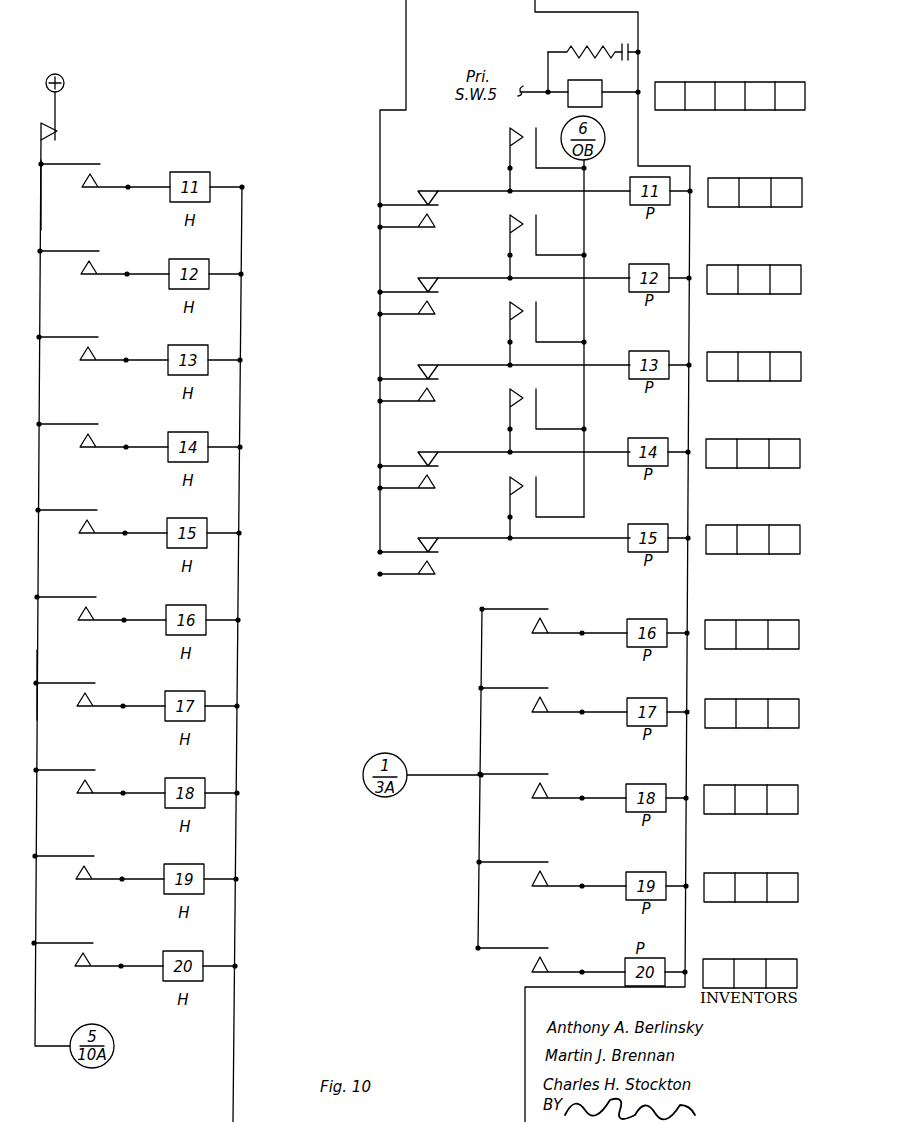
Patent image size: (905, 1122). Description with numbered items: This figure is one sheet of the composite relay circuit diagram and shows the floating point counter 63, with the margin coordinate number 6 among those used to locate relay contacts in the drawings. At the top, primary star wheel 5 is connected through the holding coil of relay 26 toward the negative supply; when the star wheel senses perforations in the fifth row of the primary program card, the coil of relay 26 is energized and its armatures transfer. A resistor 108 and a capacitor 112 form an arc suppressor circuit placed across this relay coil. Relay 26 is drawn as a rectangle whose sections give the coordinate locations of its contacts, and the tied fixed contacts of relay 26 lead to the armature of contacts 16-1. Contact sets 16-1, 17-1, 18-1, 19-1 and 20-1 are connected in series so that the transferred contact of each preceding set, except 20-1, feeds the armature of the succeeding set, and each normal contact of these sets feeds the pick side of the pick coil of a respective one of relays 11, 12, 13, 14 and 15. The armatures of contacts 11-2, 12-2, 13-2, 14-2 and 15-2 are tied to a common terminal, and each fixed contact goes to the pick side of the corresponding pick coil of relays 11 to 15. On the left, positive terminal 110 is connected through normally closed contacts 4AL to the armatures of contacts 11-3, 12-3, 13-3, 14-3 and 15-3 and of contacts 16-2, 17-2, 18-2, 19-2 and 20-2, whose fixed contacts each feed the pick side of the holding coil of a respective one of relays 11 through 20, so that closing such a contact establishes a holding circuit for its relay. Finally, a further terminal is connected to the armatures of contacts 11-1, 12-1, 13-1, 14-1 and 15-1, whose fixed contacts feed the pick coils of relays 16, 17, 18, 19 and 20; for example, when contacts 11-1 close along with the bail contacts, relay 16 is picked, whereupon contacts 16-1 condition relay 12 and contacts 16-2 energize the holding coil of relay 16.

The positive terminal 110 is at (51, 76).
The normally closed contacts 4AL is at (58, 127).
The primary star wheel 5 is at (31, 195).
The coordinate number 6 is at (28, 685).
The floating point counter 63 is at (208, 77).
The resistor 108 is at (578, 44).
The capacitor 112 is at (630, 42).
The relay 26 is at (686, 84).
The relay 11 is at (755, 182).
The relay 12 is at (754, 269).
The relay 13 is at (754, 356).
The relay 14 is at (753, 443).
The relay 15 is at (753, 529).
The relay 16 is at (752, 624).
The relay 17 is at (752, 703).
The relay 18 is at (751, 789).
The relay 19 is at (751, 877).
The relay 20 is at (750, 963).
The contacts 11-3 is at (102, 176).
The contacts 12-3 is at (101, 263).
The contacts 13-3 is at (100, 349).
The contacts 14-3 is at (100, 436).
The contacts 15-3 is at (99, 522).
The contacts 16-2 is at (98, 609).
The contacts 17-2 is at (97, 695).
The contacts 18-2 is at (97, 782).
The contacts 19-2 is at (96, 868).
The contacts 20-2 is at (95, 955).
The contacts 16-1 is at (376, 207).
The contacts 17-1 is at (376, 294).
The contacts 18-1 is at (376, 381).
The contacts 19-1 is at (376, 468).
The contacts 20-1 is at (376, 554).
The contacts 11-2 is at (510, 140).
The contacts 12-2 is at (510, 227).
The contacts 13-2 is at (510, 314).
The contacts 14-2 is at (510, 401).
The contacts 15-2 is at (510, 489).
The contacts 11-1 is at (549, 625).
The contacts 12-1 is at (549, 704).
The contacts 13-1 is at (549, 790).
The contacts 14-1 is at (549, 878).
The contacts 15-1 is at (549, 964).